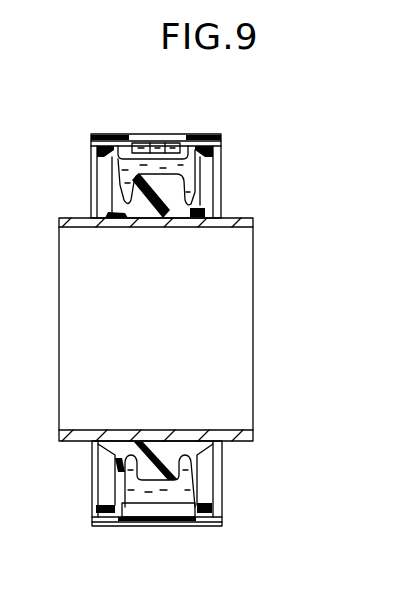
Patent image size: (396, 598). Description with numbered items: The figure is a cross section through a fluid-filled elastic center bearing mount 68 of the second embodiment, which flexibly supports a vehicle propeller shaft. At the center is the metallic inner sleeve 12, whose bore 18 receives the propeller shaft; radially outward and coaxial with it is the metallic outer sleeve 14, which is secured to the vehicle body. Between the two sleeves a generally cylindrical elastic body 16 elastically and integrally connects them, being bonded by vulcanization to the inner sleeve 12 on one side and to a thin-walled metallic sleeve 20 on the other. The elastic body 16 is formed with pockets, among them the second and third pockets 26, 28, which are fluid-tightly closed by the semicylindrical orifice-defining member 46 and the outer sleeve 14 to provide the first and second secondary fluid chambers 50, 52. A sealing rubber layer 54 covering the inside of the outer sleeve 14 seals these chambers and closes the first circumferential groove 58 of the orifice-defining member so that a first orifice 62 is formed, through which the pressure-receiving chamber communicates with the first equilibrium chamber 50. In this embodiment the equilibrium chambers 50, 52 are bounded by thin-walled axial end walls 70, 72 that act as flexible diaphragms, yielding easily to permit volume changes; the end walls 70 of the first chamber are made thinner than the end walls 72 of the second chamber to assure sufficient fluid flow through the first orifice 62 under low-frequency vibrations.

The inner sleeve 12 is at (248, 437).
The outer sleeve 14 is at (129, 522).
The elastic body 16 is at (104, 195).
The bore 18 is at (125, 228).
The metallic sleeve 20 is at (100, 513).
The second pocket 26 is at (188, 187).
The third pocket 28 is at (192, 494).
The orifice-defining member 46 is at (175, 507).
The first secondary fluid chamber 50 is at (122, 168).
The second secondary fluid chamber 52 is at (126, 465).
The sealing rubber layer 54 is at (107, 140).
The first circumferential groove 58 is at (170, 143).
The first orifice 62 is at (140, 148).
The fluid-filled elastic center bearing mount 68 is at (288, 116).
The axial end walls 70 is at (112, 183).
The axial end walls 72 is at (112, 488).